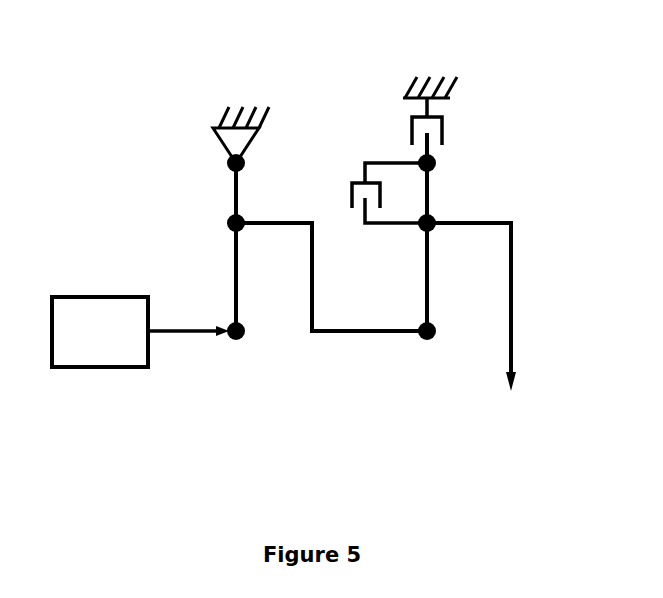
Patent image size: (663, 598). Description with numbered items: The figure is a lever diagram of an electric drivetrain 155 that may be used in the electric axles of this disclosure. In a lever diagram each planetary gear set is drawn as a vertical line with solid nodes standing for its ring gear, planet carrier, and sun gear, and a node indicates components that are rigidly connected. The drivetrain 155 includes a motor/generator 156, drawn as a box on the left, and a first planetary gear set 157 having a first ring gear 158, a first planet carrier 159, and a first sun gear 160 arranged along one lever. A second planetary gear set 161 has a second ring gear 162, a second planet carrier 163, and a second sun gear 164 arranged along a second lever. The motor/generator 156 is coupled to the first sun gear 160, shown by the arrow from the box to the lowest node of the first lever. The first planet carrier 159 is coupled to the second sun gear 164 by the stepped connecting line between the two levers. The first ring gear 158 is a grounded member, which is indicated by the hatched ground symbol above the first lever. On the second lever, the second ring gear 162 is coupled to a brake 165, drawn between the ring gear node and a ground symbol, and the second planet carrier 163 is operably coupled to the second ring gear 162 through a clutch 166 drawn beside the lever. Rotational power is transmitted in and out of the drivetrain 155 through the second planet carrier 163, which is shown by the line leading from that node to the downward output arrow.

The electric drivetrain 155 is at (127, 58).
The motor/generator 156 is at (76, 297).
The first planetary gear set 157 is at (246, 416).
The first ring gear 158 is at (229, 158).
The first planet carrier 159 is at (228, 222).
The first sun gear 160 is at (230, 327).
The second planetary gear set 161 is at (426, 408).
The second ring gear 162 is at (437, 163).
The second planet carrier 163 is at (440, 222).
The second sun gear 164 is at (435, 333).
The brake 165 is at (443, 117).
The clutch 166 is at (352, 185).